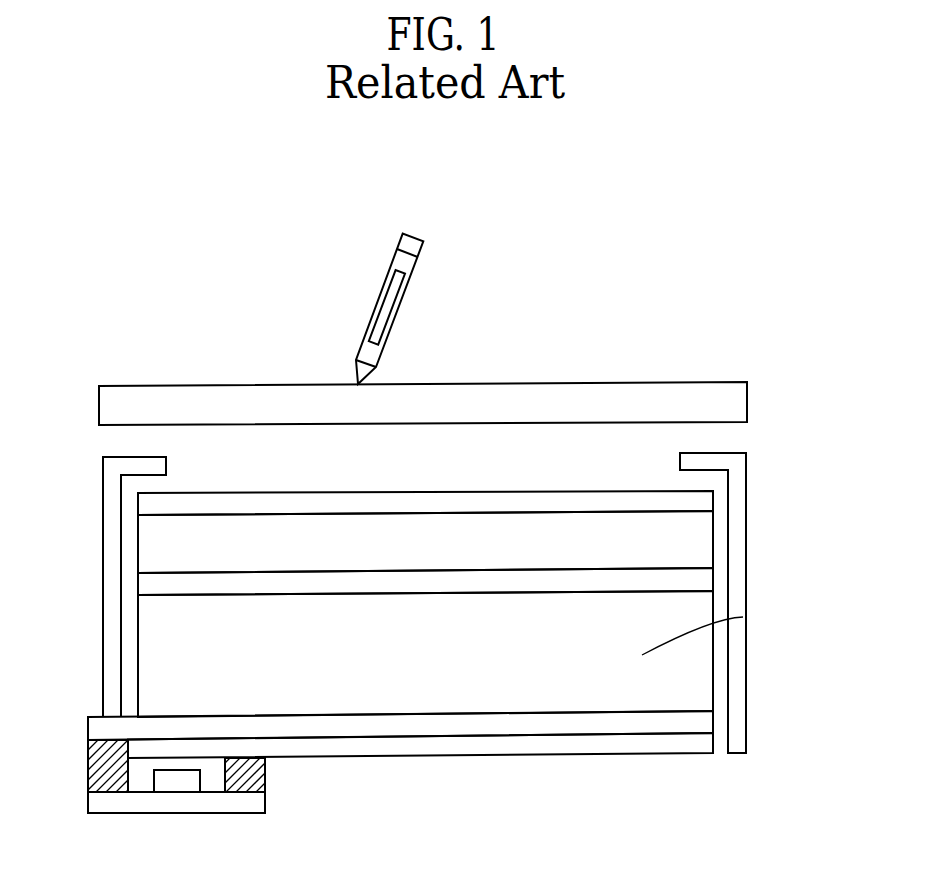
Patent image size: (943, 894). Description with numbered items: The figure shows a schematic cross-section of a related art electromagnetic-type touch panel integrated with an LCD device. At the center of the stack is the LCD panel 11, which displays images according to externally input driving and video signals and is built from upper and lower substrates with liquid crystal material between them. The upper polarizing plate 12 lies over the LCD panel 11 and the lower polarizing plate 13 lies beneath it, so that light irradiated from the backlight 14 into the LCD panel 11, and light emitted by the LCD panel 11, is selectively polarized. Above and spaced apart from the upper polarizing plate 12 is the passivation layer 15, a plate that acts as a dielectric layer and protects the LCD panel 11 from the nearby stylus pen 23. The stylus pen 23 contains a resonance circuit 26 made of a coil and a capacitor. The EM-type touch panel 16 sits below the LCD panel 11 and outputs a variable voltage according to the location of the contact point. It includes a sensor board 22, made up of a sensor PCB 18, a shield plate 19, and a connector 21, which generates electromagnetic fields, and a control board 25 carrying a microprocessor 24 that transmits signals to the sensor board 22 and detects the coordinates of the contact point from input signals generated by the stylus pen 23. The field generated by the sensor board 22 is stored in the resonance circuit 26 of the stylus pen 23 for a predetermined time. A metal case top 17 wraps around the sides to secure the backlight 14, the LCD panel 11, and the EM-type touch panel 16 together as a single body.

The LCD panel 11 is at (700, 543).
The upper polarizing plate 12 is at (697, 502).
The lower polarizing plate 13 is at (700, 580).
The backlight 14 is at (692, 659).
The passivation layer 15 is at (622, 392).
The EM-type touch panel 16 is at (80, 727).
The case top 17 is at (110, 598).
The sensor PCB 18 is at (692, 725).
The shield plate 19 is at (692, 742).
The connector 21 is at (107, 787).
The sensor board 22 is at (813, 708).
The stylus pen 23 is at (410, 263).
The microprocessor 24 is at (177, 782).
The control board 25 is at (240, 803).
The resonance circuit 26 is at (388, 310).